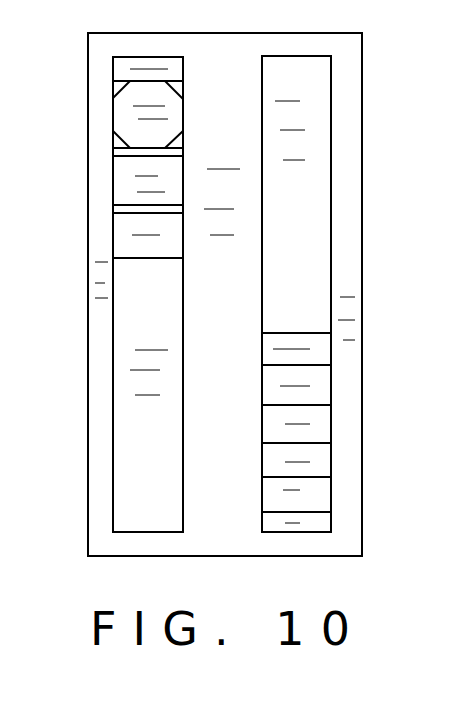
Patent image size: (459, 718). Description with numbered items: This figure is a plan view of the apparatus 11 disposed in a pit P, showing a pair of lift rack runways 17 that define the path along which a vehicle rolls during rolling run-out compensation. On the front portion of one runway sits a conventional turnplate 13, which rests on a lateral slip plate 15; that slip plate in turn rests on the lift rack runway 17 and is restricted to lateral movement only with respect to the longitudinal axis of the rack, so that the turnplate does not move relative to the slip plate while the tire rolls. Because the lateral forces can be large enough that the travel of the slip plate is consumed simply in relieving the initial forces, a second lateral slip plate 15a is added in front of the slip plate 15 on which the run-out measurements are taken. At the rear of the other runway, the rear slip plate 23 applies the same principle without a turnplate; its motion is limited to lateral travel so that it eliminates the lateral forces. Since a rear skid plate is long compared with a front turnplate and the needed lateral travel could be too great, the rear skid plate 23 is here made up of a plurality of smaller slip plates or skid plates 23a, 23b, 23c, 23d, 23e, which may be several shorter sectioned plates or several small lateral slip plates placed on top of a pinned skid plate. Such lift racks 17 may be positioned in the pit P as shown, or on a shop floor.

The pit P is at (348, 106).
The apparatus 11 is at (103, 362).
The turnplate 13 is at (128, 110).
The lateral slip plate 15 is at (129, 183).
The lateral slip plate 15a is at (128, 247).
The lift rack runway 17 is at (137, 312).
The rear slip plate 23 is at (306, 428).
The skid plate section 23a is at (273, 348).
The skid plate section 23b is at (275, 386).
The skid plate section 23c is at (275, 424).
The skid plate section 23d is at (275, 461).
The skid plate section 23e is at (275, 496).